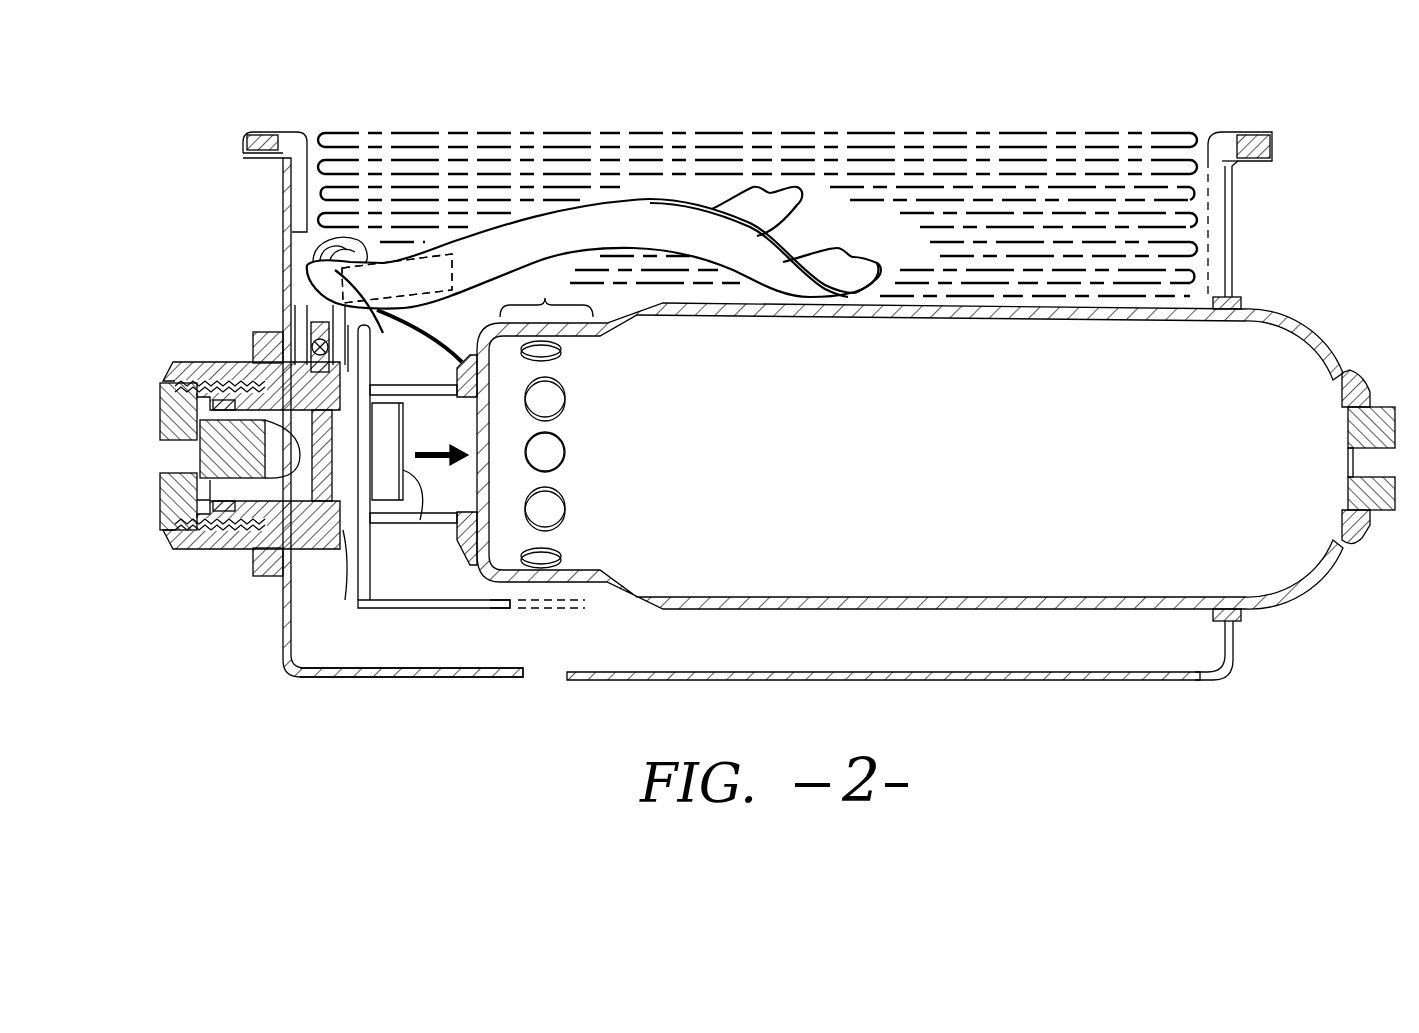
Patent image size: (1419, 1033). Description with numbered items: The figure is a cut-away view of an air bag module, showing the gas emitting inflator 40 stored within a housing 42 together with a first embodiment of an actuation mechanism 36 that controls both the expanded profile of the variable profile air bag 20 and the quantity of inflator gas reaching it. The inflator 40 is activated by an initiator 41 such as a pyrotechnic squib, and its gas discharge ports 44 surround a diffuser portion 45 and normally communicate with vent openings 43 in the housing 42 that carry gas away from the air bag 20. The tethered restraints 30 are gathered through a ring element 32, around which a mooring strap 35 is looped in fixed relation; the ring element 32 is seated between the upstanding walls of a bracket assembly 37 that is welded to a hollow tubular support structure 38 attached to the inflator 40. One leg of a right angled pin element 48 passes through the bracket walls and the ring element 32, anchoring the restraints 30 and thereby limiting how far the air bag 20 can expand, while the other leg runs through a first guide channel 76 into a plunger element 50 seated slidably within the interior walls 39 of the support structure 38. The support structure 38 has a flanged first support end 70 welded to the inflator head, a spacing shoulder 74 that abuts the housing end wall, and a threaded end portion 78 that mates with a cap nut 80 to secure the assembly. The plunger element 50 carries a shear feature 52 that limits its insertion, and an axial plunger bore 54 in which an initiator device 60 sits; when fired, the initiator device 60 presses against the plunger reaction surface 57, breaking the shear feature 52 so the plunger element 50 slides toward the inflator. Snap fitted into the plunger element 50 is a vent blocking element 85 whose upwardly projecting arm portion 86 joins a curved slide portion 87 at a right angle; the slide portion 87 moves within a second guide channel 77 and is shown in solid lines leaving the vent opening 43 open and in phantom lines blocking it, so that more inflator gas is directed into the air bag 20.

The air bag 20 is at (1085, 130).
The tethered restraints 30 is at (624, 238).
The ring element 32 is at (325, 245).
The mooring strap 35 is at (432, 320).
The actuation mechanism 36 is at (270, 320).
The bracket assembly 37 is at (337, 300).
The support structure 38 is at (285, 666).
The interior walls 39 is at (185, 364).
The gas emitting inflator 40 is at (1275, 325).
The initiator 41 is at (1397, 413).
The housing 42 is at (1190, 683).
The vent openings 43 is at (567, 670).
The gas discharge ports 44 is at (570, 456).
The diffuser portion 45 is at (546, 290).
The pin element 48 is at (368, 352).
The plunger element 50 is at (422, 520).
The shear feature 52 is at (222, 550).
The axial plunger bore 54 is at (302, 452).
The plunger reaction surface 57 is at (240, 368).
The initiator device 60 is at (175, 440).
The first support end 70 is at (495, 365).
The spacing shoulder 74 is at (280, 332).
The first guide channel 76 is at (418, 398).
The second guide channel 77 is at (452, 565).
The threaded end portion 78 is at (200, 550).
The cap nut 80 is at (158, 510).
The vent blocking element 85 is at (448, 612).
The arm portion 86 is at (343, 600).
The slide portion 87 is at (485, 612).